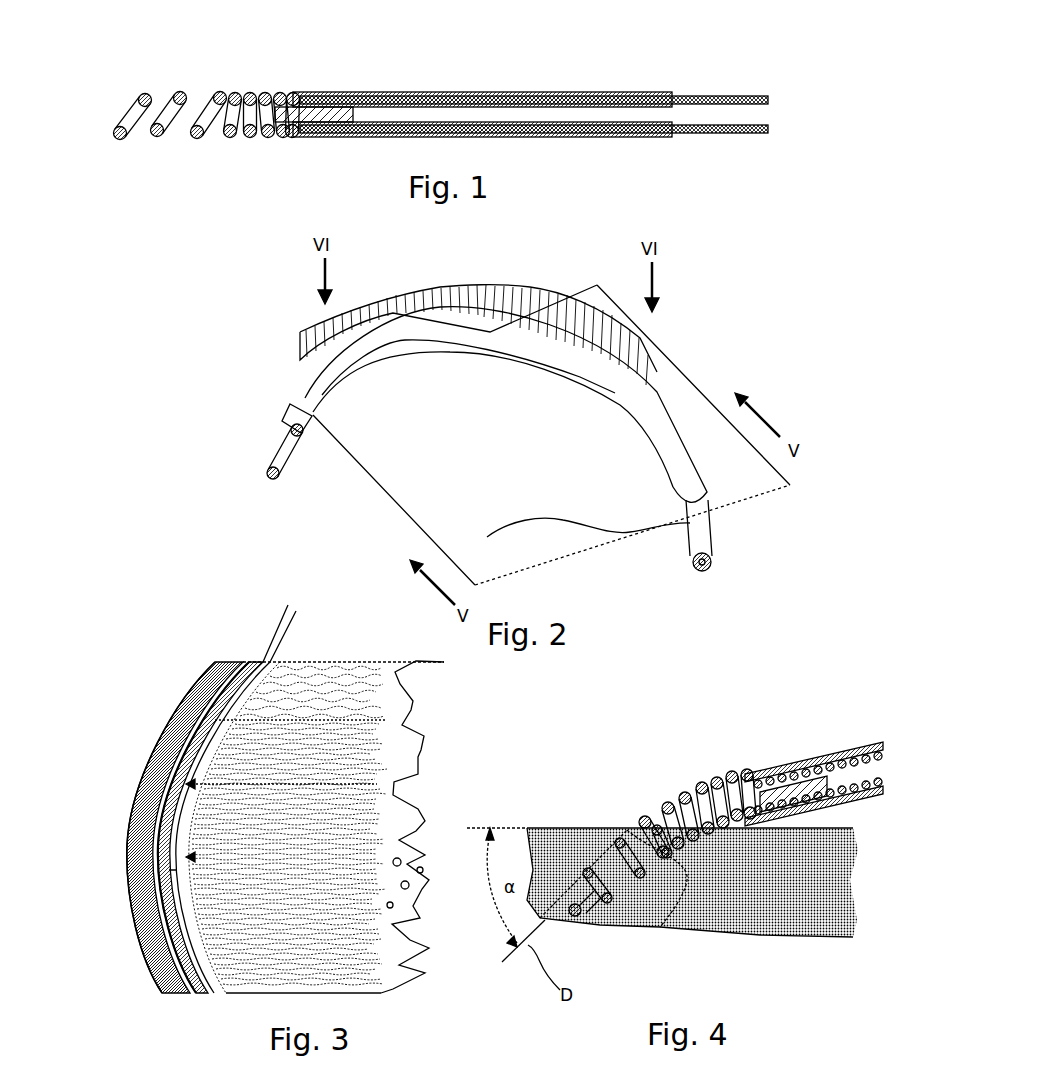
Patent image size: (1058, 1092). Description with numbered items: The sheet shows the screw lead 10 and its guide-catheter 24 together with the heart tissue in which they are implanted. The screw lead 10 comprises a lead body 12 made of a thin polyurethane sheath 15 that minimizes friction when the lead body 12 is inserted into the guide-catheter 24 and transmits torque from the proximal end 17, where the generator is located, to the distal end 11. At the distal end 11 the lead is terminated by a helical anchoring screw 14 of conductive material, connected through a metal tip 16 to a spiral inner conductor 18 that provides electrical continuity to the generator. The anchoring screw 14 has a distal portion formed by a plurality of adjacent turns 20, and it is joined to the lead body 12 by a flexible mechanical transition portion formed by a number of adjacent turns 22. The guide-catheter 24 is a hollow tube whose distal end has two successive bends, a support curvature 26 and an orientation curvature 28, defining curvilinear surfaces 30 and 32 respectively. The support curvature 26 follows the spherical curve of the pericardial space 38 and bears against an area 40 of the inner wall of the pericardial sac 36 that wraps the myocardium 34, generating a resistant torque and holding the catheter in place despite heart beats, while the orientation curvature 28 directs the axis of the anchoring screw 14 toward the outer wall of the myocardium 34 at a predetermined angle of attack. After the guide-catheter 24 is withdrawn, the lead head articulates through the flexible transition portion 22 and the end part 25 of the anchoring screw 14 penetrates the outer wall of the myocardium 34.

In FIG. 1, the screw lead 10 is at (496, 94).
In FIG. 2, the screw lead 10 is at (288, 418).
In FIG. 1, the distal end 11 is at (118, 108).
In FIG. 2, the distal end 11 is at (265, 472).
In FIG. 1, the lead body 12 is at (567, 93).
In FIG. 2, the lead body 12 is at (704, 526).
In FIG. 1, the helical anchoring screw 14 is at (208, 166).
In FIG. 2, the helical anchoring screw 14 is at (275, 480).
In FIG. 4, the helical anchoring screw 14 is at (624, 813).
In FIG. 1, the polyurethane sheath 15 is at (343, 137).
In FIG. 1, the metal tip 16 is at (300, 107).
In FIG. 1, the proximal end 17 is at (764, 117).
In FIG. 2, the proximal end 17 is at (702, 578).
In FIG. 1, the inner conductor 18 is at (375, 107).
In FIG. 1, the adjacent turns 20 is at (180, 92).
In FIG. 4, the adjacent turns 20 is at (660, 928).
In FIG. 1, the adjacent turns of transition portion 22 is at (245, 95).
In FIG. 4, the adjacent turns of transition portion 22 is at (747, 763).
In FIG. 2, the guide-catheter 24 is at (655, 380).
In FIG. 3, the guide-catheter 24 is at (252, 657).
In FIG. 4, the guide-catheter 24 is at (833, 757).
In FIG. 4, the end part 25 is at (673, 913).
In FIG. 2, the support curvature 26 is at (571, 381).
In FIG. 3, the support curvature 26 is at (281, 769).
In FIG. 2, the orientation curvature 28 is at (379, 356).
In FIG. 3, the orientation curvature 28 is at (206, 797).
In FIG. 2, the curvilinear surface 30 is at (440, 285).
In FIG. 2, the curvilinear surface 32 is at (493, 536).
In FIG. 3, the myocardium 34 is at (336, 976).
In FIG. 4, the myocardium 34 is at (793, 900).
In FIG. 3, the pericardial sac 36 is at (166, 988).
In FIG. 3, the pericardial space 38 is at (211, 993).
In FIG. 4, the pericardial space 38 is at (606, 720).
In FIG. 3, the area 40 is at (138, 758).